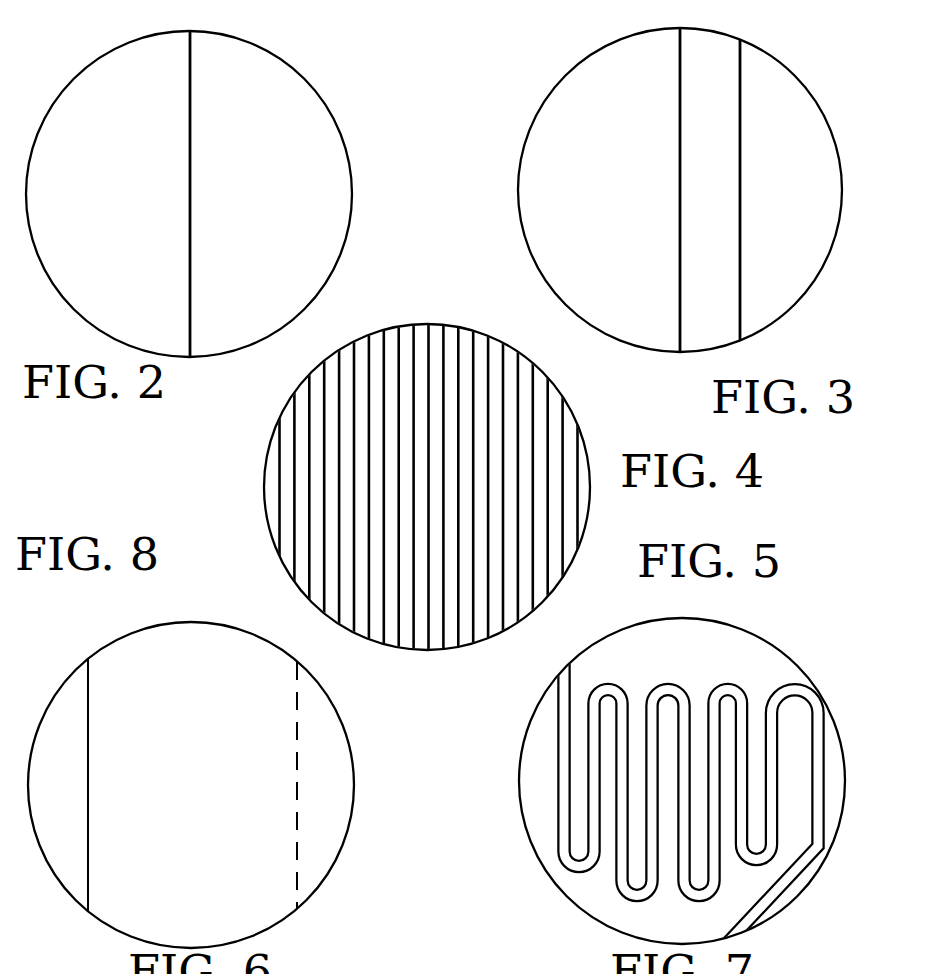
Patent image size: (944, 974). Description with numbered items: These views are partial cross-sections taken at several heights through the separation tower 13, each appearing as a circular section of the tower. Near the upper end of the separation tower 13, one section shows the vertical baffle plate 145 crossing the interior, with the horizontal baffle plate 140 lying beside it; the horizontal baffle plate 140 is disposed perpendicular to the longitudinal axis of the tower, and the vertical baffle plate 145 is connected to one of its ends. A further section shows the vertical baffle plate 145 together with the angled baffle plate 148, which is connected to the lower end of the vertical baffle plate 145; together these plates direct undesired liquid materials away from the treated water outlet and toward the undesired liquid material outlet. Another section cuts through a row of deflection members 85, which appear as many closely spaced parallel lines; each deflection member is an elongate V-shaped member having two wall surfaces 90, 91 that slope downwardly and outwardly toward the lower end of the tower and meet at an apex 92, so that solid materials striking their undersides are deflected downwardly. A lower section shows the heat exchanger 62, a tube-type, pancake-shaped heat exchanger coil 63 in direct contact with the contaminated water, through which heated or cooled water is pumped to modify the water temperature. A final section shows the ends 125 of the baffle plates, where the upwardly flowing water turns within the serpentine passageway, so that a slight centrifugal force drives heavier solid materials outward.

In FIG. 2, the separation tower 13 is at (350, 165).
In FIG. 3, the separation tower 13 is at (801, 78).
In FIG. 4, the separation tower 13 is at (495, 336).
In FIG. 8, the separation tower 13 is at (355, 815).
In FIG. 5, the separation tower 13 is at (823, 870).
In FIG. 2, the vertical baffle plate 145 is at (190, 80).
In FIG. 3, the vertical baffle plate 145 is at (679, 29).
In FIG. 2, the horizontal baffle plate 140 is at (288, 135).
In FIG. 3, the angled baffle plate 148 is at (706, 305).
In FIG. 4, the deflection members 85 is at (381, 326).
In FIG. 4, the wall surface 90 is at (303, 425).
In FIG. 4, the wall surface 91 is at (316, 470).
In FIG. 4, the apex 92 is at (316, 473).
In FIG. 8, the ends of baffle plates 125 is at (110, 673).
In FIG. 5, the heat exchanger 62 is at (756, 633).
In FIG. 5, the heat exchanger coil 63 is at (817, 763).